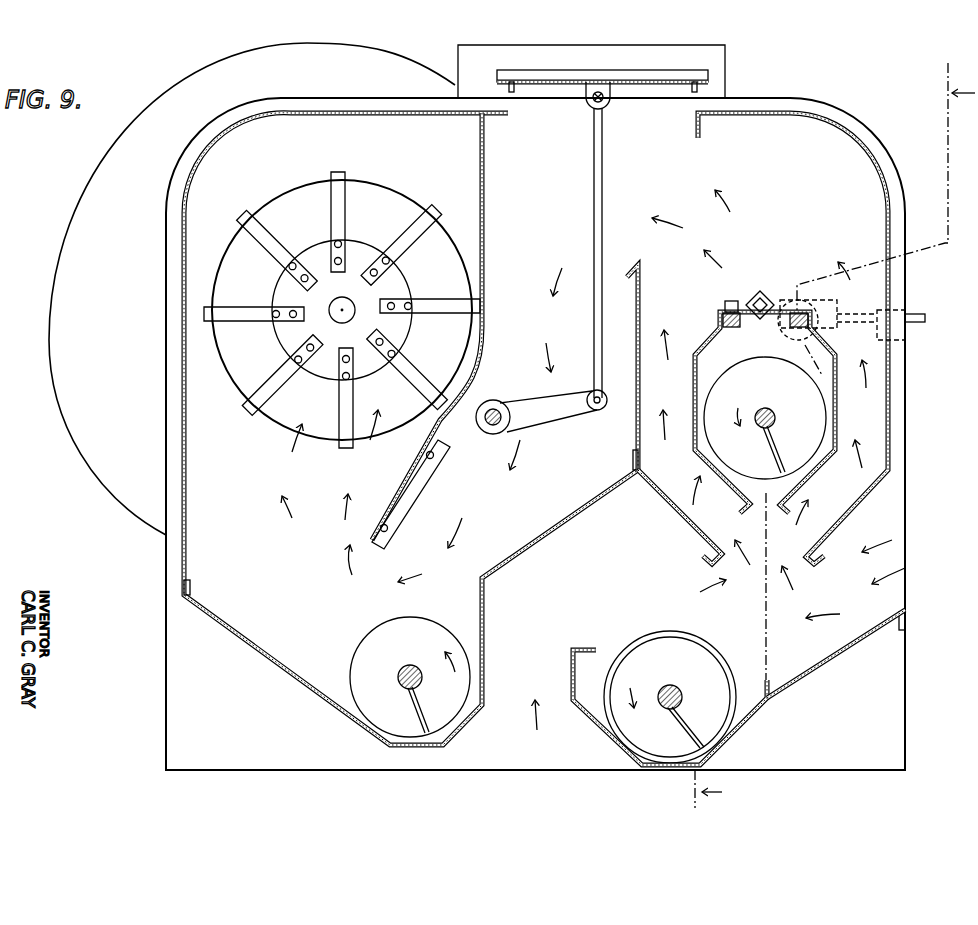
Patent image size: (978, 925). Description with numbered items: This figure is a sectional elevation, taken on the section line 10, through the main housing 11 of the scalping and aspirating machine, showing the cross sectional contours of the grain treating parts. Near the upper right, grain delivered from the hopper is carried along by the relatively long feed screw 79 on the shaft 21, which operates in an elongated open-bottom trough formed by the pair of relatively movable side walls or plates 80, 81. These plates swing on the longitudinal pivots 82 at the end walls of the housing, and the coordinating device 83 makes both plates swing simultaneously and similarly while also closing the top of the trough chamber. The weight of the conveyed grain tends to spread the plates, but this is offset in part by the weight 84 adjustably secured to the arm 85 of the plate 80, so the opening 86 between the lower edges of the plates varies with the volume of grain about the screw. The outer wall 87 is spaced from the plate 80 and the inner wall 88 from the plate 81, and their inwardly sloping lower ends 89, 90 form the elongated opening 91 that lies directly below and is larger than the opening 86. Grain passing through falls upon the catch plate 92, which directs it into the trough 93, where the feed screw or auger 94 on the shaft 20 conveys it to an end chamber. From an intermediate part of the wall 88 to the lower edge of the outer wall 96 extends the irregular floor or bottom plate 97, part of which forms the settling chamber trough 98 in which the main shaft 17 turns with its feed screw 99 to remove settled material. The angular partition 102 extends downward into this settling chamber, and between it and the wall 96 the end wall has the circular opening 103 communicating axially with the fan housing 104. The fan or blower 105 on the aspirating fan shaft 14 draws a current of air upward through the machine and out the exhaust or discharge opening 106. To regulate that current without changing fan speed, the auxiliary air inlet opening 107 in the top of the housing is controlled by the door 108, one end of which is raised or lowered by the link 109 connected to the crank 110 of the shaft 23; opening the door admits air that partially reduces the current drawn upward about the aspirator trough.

The section line 10 is at (822, 435).
The main housing 11 is at (768, 103).
The aspirating fan shaft 14 is at (340, 318).
The main shaft 17 is at (413, 665).
The shaft 20 is at (683, 690).
The shaft 21 is at (777, 419).
The shaft 23 is at (493, 426).
The feed screw 79 is at (765, 418).
The side wall or plate 80 is at (847, 475).
The side wall or plate 81 is at (708, 476).
The pivots 82 is at (792, 312).
The coordinating device 83 is at (770, 315).
The weight 84 is at (906, 313).
The arm 85 is at (927, 320).
The opening 86 is at (727, 545).
The outer wall 87 is at (893, 447).
The inner wall 88 is at (640, 322).
The inwardly sloping lower end 89 is at (845, 518).
The inwardly sloping lower end 90 is at (683, 520).
The elongated opening 91 is at (720, 605).
The catch plate 92 is at (835, 648).
The trough 93 is at (718, 752).
The feed screw or auger 94 is at (712, 693).
The outer wall 96 is at (188, 468).
The floor or bottom plate 97 is at (525, 553).
The settling chamber trough 98 is at (435, 738).
The feed screw 99 is at (455, 683).
The angular partition 102 is at (487, 347).
The circular opening 103 is at (342, 321).
The fan housing 104 is at (88, 285).
The fan or blower 105 is at (347, 432).
The exhaust or discharge opening 106 is at (715, 60).
The auxiliary air inlet opening 107 is at (650, 118).
The door 108 is at (657, 77).
The link 109 is at (603, 190).
The crank 110 is at (567, 408).